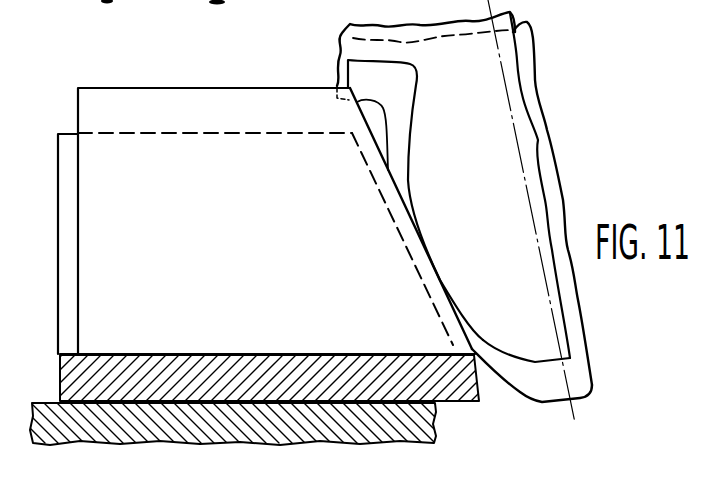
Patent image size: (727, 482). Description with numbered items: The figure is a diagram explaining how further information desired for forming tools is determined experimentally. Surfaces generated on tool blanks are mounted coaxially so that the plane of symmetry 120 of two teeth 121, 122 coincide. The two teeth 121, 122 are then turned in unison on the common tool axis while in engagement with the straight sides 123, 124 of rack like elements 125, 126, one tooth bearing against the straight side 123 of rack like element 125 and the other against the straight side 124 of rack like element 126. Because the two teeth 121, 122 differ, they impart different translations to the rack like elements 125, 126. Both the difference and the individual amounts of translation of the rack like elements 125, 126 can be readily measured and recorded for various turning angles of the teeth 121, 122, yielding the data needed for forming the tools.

The plane of symmetry 120 is at (552, 312).
The tooth 121 is at (527, 337).
The tooth 122 is at (545, 385).
The straight side 123 is at (430, 258).
The straight side 124 is at (437, 305).
The rack like element 125 is at (88, 107).
The rack like element 126 is at (67, 151).